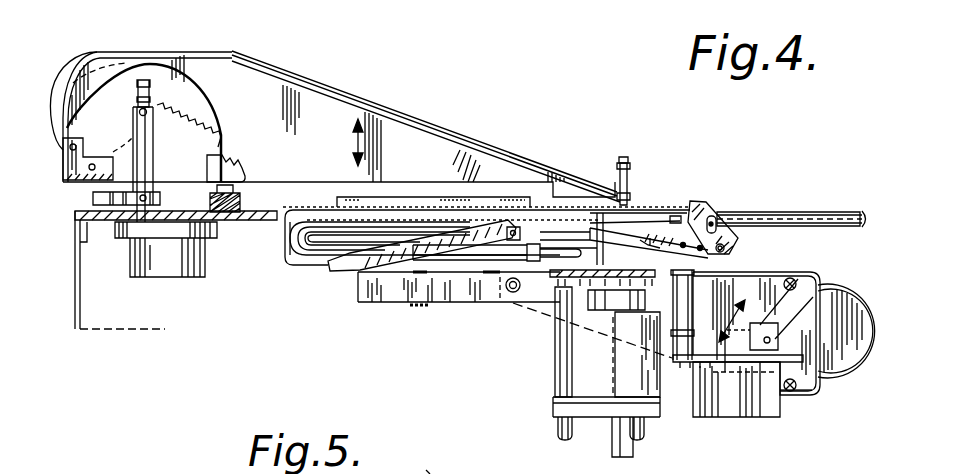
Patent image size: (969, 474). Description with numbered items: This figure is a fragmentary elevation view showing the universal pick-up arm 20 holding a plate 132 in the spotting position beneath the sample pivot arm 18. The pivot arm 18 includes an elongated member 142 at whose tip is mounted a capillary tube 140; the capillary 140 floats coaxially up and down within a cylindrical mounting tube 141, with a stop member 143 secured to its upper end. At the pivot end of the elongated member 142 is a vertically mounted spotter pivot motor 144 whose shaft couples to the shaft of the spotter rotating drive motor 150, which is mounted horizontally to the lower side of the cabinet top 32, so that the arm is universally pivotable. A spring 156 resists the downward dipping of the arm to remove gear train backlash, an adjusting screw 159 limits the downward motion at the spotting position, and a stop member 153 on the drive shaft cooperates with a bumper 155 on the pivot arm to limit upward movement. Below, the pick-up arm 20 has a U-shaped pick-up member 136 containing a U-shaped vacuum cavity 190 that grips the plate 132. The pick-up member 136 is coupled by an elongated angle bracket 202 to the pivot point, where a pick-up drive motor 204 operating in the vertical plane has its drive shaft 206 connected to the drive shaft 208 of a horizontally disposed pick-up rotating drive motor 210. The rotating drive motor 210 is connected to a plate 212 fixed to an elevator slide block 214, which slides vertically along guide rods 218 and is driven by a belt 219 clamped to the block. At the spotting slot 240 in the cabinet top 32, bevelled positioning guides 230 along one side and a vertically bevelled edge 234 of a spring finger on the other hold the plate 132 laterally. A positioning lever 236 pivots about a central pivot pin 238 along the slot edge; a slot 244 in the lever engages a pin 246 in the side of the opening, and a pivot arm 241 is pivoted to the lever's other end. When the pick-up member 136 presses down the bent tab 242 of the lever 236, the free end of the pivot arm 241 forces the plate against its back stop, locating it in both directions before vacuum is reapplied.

The spotter pivot motor 144 is at (57, 100).
The sample pivot arm 18 is at (366, 95).
The elongated member 142 is at (400, 145).
The spring 156 is at (187, 112).
The adjusting screw 159 is at (253, 175).
The bumper 155 is at (100, 182).
The stop member 153 is at (87, 203).
The spotter rotating drive motor 150 is at (177, 265).
The U-shaped pick-up member 136 is at (282, 252).
The pick-up arm 20 is at (284, 268).
The U-shaped vacuum cavity 190 is at (313, 250).
The bent tab 242 is at (334, 273).
The elongated angle bracket 202 is at (468, 285).
The central pivot pin 238 is at (516, 238).
The vertically bevelled edge 234 is at (450, 208).
The plate 132 is at (573, 208).
The stop member 143 is at (626, 163).
The cylindrical mounting tube 141 is at (633, 176).
The capillary tube 140 is at (633, 200).
The pivot arm 241 is at (710, 212).
The slot 244 is at (722, 215).
The slot 240 is at (777, 222).
The cabinet top 32 is at (845, 215).
The pin 246 is at (728, 228).
The positioning lever 236 is at (650, 246).
The drive shaft 206 is at (770, 340).
The pick-up drive motor 204 is at (848, 322).
The drive shaft 208 is at (815, 368).
The pick-up rotating drive motor 210 is at (745, 400).
The slide block 214 is at (658, 380).
The plate 212 is at (648, 362).
The guide rod 218 is at (565, 430).
The bolt 219 is at (640, 438).
The bevelled positioning guide 230 is at (426, 473).